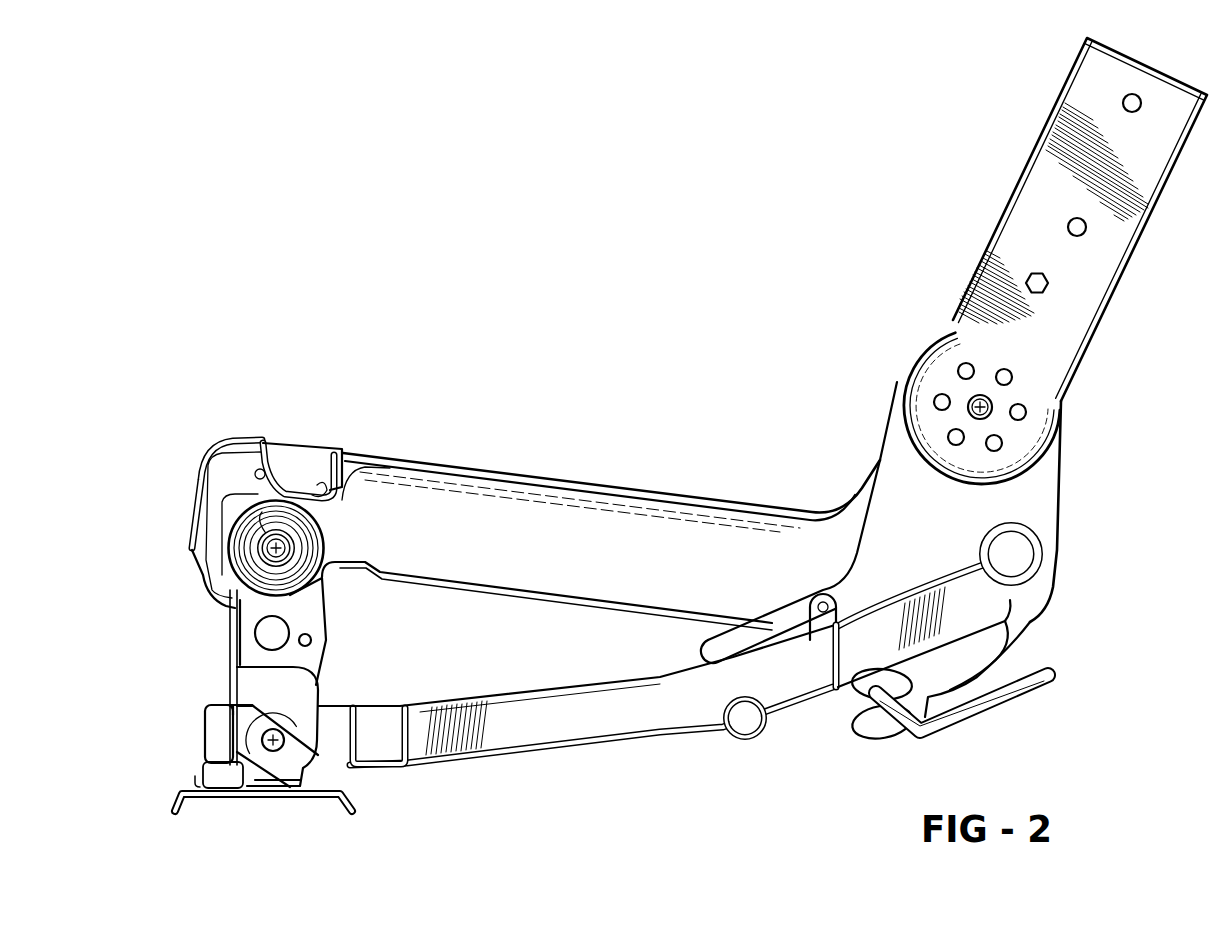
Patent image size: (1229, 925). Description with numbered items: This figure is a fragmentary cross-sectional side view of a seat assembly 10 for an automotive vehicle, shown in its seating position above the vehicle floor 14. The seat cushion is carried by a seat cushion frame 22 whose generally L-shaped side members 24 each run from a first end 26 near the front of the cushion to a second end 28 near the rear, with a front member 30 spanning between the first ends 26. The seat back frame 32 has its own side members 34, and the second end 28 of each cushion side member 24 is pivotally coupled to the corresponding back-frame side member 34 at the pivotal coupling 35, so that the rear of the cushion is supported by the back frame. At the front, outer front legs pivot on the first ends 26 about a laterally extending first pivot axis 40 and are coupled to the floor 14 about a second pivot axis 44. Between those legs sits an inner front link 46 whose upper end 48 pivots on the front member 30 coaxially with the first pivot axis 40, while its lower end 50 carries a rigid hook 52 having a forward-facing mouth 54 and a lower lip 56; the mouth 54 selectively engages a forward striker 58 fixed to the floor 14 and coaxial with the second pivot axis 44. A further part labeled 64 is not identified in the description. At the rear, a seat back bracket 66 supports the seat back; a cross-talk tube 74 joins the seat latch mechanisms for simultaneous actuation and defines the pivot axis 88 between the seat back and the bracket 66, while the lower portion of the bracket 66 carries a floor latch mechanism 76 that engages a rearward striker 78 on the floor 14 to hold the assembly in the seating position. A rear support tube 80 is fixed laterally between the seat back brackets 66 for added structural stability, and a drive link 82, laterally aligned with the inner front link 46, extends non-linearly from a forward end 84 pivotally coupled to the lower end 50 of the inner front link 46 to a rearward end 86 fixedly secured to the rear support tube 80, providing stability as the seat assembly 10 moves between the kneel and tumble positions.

The seat assembly 10 is at (578, 333).
The floor 14 is at (357, 810).
The seat cushion frame 22 is at (620, 486).
The side members 24 is at (524, 577).
The first end 26 is at (368, 472).
The second end 28 is at (867, 487).
The front member 30 is at (200, 458).
The seat back frame 32 is at (1070, 60).
The side members 34 is at (1117, 250).
The pivotal coupling 35 is at (1035, 283).
The first pivot axis 40 is at (265, 548).
The second pivot axis 44 is at (265, 745).
The inner front link 46 is at (230, 627).
The upper end 48 is at (302, 540).
The lower end 50 is at (225, 742).
The rigid hook 52 is at (310, 698).
The mouth 54 is at (228, 722).
The lower lip 56 is at (277, 770).
The forward striker 58 is at (317, 763).
The link plate 64 is at (305, 597).
The seat back bracket 66 is at (1052, 482).
The cross-talk tube 74 is at (985, 398).
The floor latch mechanism 76 is at (887, 727).
The rearward striker 78 is at (1027, 693).
The rear support tube 80 is at (1040, 548).
The drive link 82 is at (587, 730).
The forward end 84 is at (213, 732).
The rearward end 86 is at (1007, 597).
The pivot axis 88 is at (970, 405).